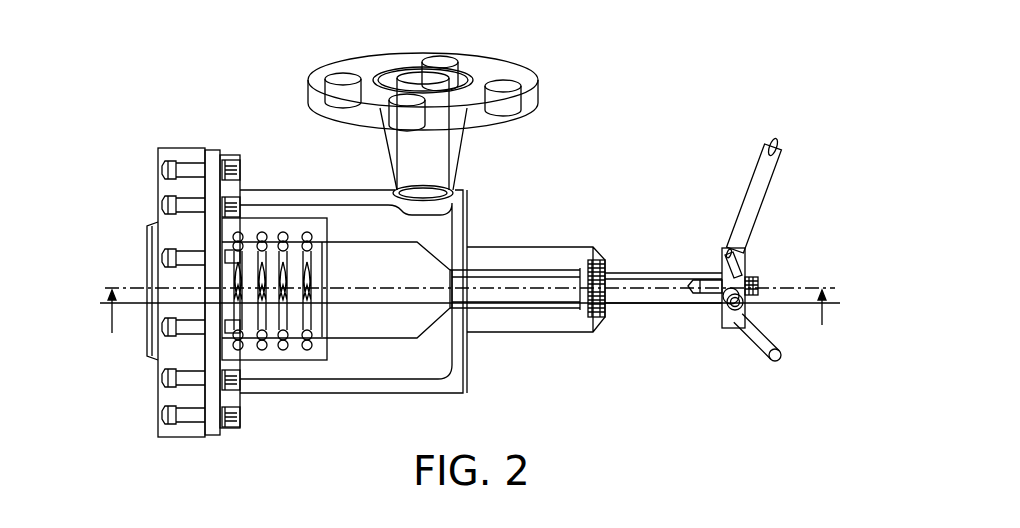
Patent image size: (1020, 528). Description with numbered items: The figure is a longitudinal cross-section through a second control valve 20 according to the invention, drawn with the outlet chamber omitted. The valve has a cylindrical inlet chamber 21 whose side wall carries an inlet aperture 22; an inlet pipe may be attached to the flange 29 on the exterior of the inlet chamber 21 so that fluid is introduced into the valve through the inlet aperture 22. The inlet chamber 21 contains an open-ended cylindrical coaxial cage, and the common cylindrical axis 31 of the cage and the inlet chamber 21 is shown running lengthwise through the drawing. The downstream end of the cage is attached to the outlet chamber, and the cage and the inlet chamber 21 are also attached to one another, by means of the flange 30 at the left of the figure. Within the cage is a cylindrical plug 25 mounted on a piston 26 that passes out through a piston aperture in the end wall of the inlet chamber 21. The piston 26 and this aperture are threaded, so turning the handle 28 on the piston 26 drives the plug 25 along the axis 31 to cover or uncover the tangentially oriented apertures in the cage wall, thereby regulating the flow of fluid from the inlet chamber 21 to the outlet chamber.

The control valve 20 is at (672, 101).
The inlet chamber 21 is at (380, 368).
The inlet aperture 22 is at (462, 193).
The cylindrical plug 25 is at (407, 268).
The piston 26 is at (655, 296).
The handle 28 is at (773, 188).
The flange 29 is at (487, 54).
The flange 30 is at (190, 430).
The cylindrical axis 31 is at (798, 286).